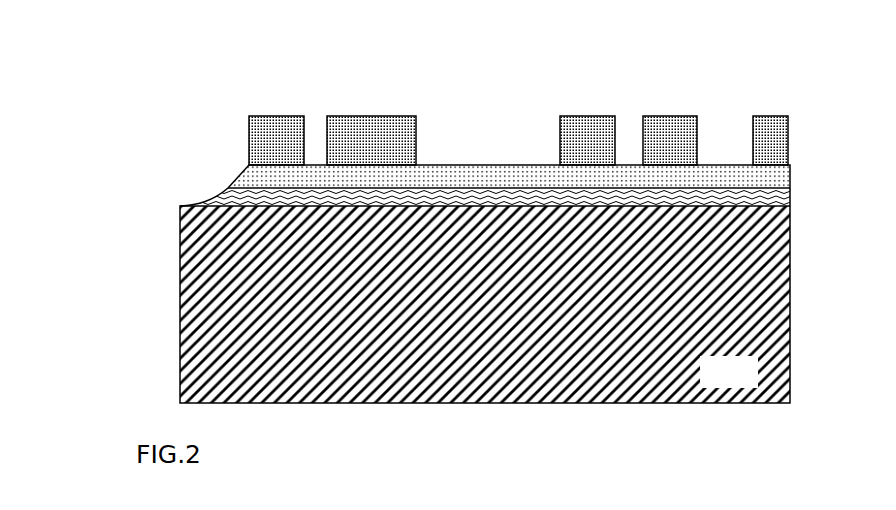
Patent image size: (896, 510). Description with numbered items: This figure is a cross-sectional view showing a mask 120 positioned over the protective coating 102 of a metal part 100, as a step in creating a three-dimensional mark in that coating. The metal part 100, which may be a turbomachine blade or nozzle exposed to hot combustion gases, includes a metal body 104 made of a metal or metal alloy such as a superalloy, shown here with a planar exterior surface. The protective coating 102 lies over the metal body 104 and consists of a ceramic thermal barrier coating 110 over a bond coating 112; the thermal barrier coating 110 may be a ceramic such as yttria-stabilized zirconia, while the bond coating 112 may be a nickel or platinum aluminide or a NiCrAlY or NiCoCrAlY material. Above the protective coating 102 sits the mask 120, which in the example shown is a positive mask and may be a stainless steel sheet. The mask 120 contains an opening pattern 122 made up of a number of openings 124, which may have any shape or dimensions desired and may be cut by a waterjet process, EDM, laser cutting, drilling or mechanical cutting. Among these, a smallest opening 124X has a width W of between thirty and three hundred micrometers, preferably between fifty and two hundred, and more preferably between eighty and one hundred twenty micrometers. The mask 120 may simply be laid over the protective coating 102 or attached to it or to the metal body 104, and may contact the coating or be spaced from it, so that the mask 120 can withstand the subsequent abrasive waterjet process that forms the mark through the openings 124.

The metal part 100 is at (158, 158).
The protective coating 102 is at (784, 159).
The metal body 104 is at (733, 373).
The ceramic thermal barrier coating 110 is at (712, 167).
The bond coating 112 is at (780, 200).
The mask 120 is at (184, 139).
The opening pattern 122 is at (754, 102).
The openings 124 is at (304, 145).
The smallest opening 124X is at (718, 117).
The width W is at (698, 134).